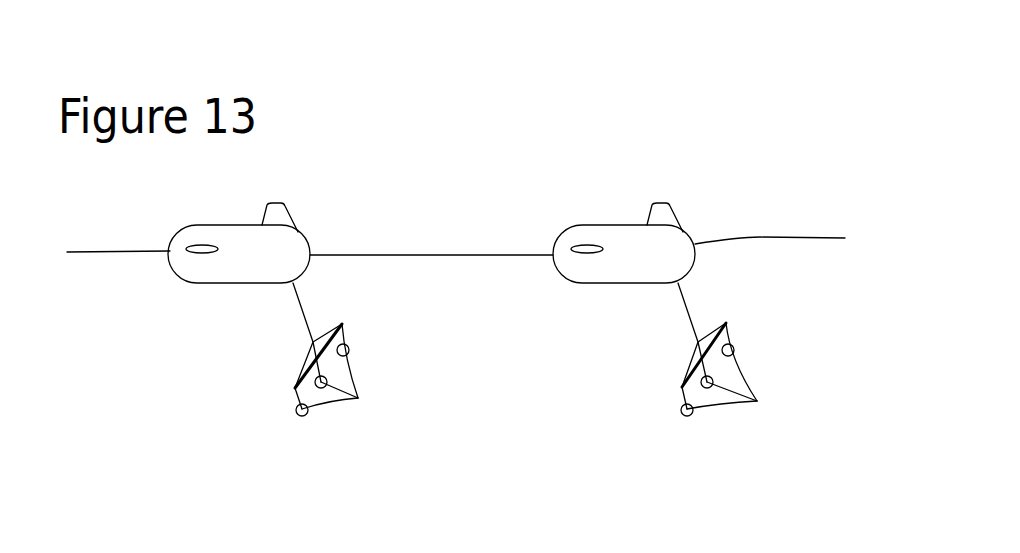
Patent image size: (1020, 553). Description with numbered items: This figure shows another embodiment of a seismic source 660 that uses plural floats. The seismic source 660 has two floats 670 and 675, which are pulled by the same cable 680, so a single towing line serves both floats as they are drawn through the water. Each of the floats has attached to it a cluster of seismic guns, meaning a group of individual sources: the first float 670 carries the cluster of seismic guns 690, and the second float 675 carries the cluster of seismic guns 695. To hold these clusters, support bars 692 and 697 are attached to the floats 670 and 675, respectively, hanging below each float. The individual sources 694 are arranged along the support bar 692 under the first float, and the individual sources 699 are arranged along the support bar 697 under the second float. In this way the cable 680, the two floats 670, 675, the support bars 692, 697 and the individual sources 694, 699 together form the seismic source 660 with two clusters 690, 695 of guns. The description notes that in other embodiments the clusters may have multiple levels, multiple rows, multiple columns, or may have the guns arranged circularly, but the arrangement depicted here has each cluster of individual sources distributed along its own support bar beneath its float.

The seismic source 660 is at (443, 165).
The float 670 is at (193, 225).
The float 675 is at (580, 225).
The cable 680 is at (108, 252).
The cluster of seismic guns 690 is at (343, 323).
The support bar 692 is at (303, 375).
The individual sources 694 is at (352, 399).
The cluster of seismic guns 695 is at (726, 322).
The support bar 697 is at (685, 377).
The individual sources 699 is at (742, 400).